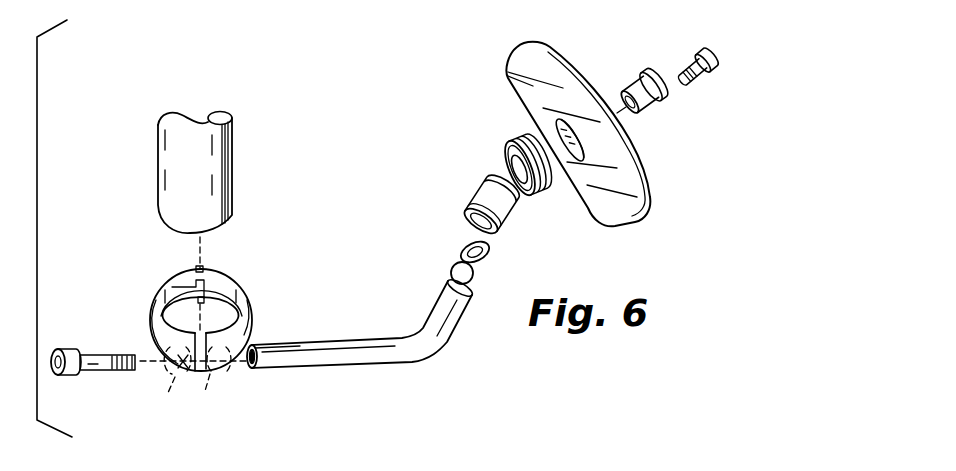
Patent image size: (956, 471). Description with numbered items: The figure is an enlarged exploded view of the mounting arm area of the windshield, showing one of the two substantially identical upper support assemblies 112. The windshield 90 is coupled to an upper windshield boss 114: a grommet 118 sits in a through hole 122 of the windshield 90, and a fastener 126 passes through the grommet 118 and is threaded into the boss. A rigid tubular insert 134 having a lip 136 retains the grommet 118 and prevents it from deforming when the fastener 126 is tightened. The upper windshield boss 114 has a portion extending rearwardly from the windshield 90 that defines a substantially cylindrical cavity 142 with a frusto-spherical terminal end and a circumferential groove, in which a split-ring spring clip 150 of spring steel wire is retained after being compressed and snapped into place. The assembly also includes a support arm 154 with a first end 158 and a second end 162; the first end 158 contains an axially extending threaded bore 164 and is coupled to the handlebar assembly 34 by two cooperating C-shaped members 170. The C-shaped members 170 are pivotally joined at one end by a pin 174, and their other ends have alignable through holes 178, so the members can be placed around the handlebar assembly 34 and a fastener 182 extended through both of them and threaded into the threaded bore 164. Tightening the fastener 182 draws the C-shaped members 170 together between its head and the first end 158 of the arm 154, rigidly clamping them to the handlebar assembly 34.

The handlebar assembly 34 is at (163, 147).
The windshield 90 is at (520, 56).
The upper support assembly 112 is at (356, 109).
The upper windshield boss 114 is at (483, 190).
The grommet 118 is at (508, 147).
The through hole 122 is at (557, 152).
The fastener 126 is at (716, 62).
The rigid tubular insert 134 is at (637, 81).
The lip 136 is at (667, 103).
The cavity 142 is at (500, 236).
The split-ring spring clip 150 is at (460, 246).
The support arm 154 is at (391, 348).
The first end 158 is at (268, 350).
The second end 162 is at (454, 268).
The threaded bore 164 is at (247, 372).
The C-shaped members 170 is at (172, 292).
The pin 174 is at (202, 268).
The through holes 178 is at (188, 395).
The fastener 182 is at (70, 378).